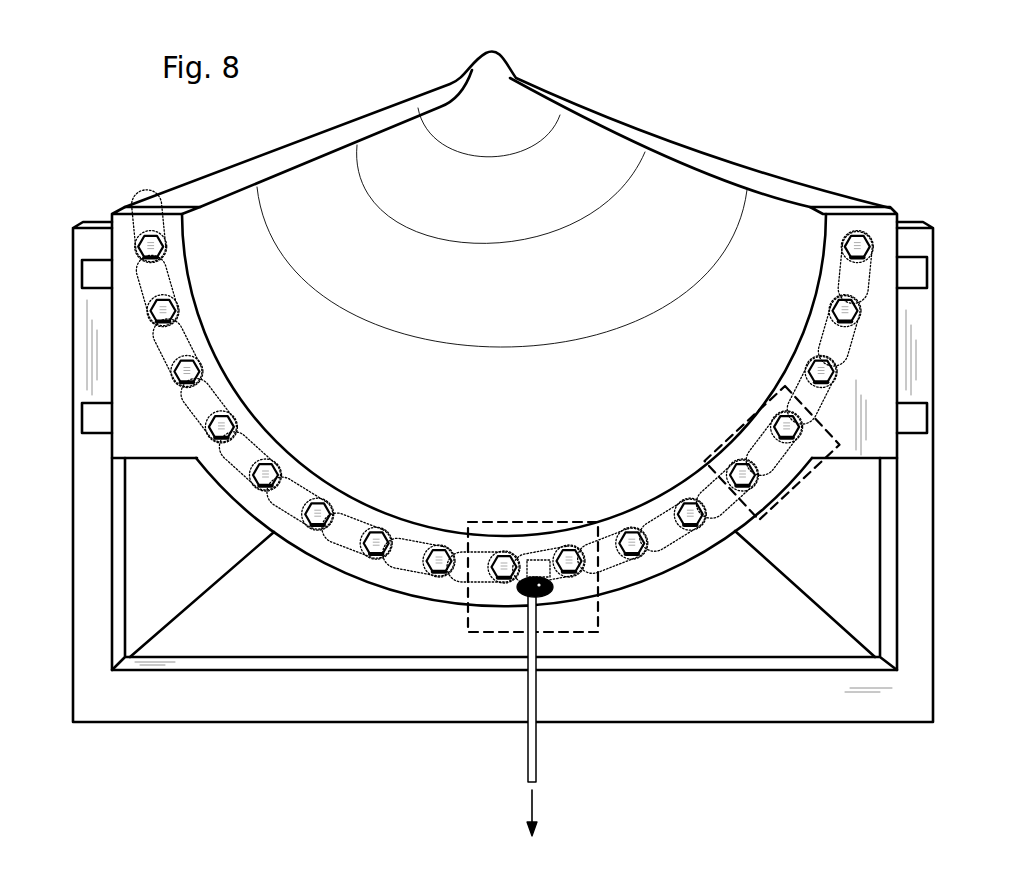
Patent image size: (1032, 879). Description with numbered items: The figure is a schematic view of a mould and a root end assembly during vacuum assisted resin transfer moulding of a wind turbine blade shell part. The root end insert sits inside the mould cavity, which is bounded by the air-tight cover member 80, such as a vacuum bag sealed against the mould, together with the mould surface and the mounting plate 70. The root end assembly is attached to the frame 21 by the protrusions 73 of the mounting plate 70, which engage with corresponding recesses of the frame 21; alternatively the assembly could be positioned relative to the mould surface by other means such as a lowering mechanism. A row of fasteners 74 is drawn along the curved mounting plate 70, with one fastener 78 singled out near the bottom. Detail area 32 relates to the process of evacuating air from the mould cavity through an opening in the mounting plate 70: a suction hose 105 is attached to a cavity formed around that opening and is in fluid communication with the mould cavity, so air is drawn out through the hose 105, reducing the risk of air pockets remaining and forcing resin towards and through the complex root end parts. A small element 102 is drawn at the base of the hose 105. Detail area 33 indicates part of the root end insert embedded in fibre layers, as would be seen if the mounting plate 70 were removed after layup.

The frame 21 is at (300, 707).
The mounting plate 70 is at (128, 238).
The protrusions 73 is at (95, 269).
The fasteners 74 is at (507, 515).
The fastener 78 is at (498, 580).
The air-tight cover member 80 is at (677, 205).
The detail area 32 is at (605, 610).
The detail area 33 is at (783, 502).
The sensor 102 is at (536, 558).
The suction hose 105 is at (528, 748).